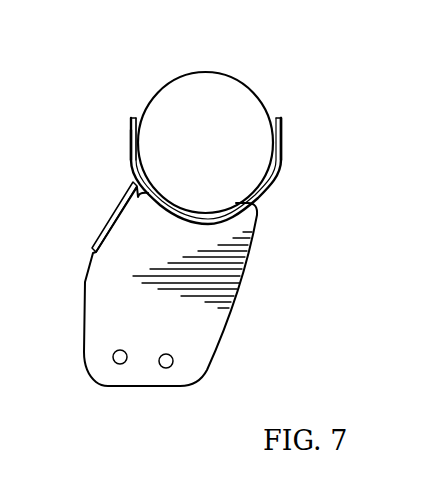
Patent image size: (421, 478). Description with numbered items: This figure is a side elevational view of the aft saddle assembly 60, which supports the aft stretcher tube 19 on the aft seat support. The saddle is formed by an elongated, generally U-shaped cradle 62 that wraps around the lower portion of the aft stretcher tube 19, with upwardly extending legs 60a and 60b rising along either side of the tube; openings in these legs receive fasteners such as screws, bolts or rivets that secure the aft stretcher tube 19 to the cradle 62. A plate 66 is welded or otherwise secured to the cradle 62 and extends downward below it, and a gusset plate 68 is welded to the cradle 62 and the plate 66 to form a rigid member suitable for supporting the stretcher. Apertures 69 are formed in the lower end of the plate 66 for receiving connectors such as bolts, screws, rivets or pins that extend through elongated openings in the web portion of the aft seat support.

The aft stretcher tube 19 is at (192, 73).
The aft saddle assembly 60 is at (128, 125).
The upwardly extending leg 60a is at (137, 135).
The upwardly extending leg 60b is at (282, 128).
The U-shaped cradle 62 is at (129, 157).
The plate 66 is at (107, 313).
The gusset plate 68 is at (104, 223).
The apertures 69 is at (120, 357).